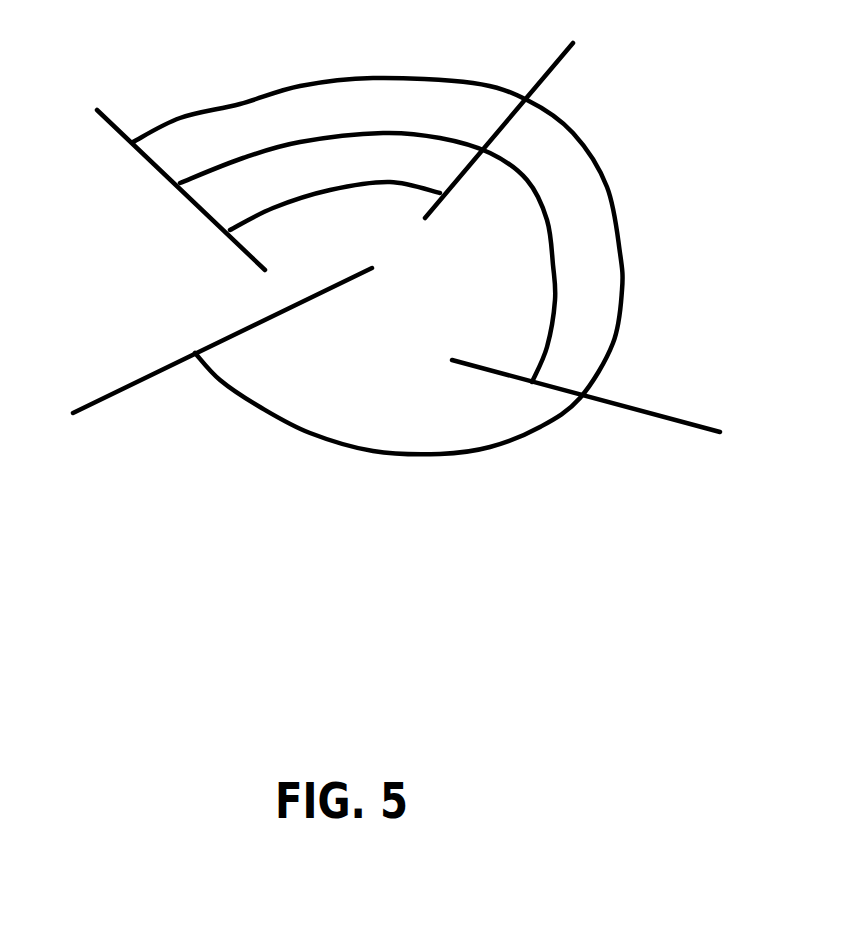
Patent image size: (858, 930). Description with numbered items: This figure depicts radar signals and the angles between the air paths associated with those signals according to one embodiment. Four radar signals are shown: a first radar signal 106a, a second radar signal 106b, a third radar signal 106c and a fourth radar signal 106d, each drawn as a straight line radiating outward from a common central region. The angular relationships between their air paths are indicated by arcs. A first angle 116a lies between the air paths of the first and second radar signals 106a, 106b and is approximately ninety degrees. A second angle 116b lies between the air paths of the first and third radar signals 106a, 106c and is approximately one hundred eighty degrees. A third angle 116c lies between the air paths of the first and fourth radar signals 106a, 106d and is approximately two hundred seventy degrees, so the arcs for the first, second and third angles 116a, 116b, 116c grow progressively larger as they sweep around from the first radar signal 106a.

The first radar signal 106a is at (99, 111).
The second radar signal 106b is at (573, 44).
The third radar signal 106c is at (688, 419).
The fourth radar signal 106d is at (103, 400).
The first angle 116a is at (320, 194).
The second angle 116b is at (550, 263).
The third angle 116c is at (412, 457).